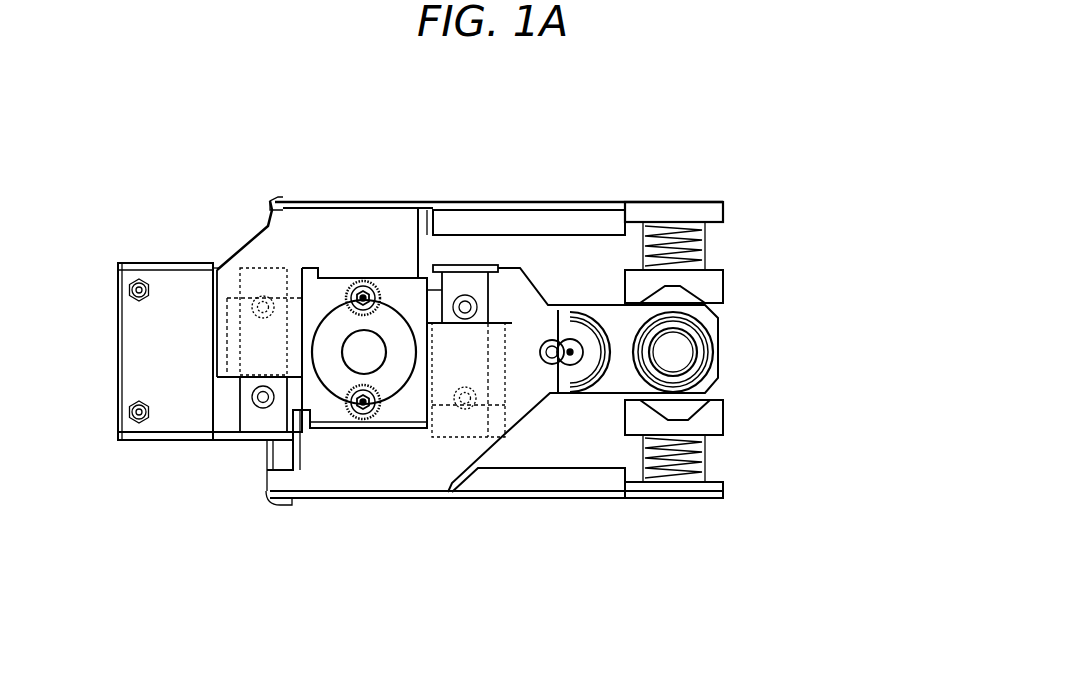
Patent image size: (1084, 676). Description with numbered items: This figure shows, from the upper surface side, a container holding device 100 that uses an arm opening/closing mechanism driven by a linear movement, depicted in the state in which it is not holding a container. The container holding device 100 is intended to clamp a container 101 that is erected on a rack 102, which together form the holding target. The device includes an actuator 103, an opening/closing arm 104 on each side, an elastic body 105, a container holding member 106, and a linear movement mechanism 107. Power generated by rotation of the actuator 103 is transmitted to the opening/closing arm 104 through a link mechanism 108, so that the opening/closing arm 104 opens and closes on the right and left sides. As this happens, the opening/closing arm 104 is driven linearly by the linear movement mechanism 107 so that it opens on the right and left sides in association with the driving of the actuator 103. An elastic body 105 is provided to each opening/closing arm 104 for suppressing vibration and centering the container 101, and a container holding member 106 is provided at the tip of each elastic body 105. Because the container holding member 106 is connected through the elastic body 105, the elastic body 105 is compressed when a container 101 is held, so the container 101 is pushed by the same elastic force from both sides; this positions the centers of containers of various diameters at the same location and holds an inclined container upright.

The container holding device 100 is at (735, 548).
The container 101 is at (713, 353).
The rack 102 is at (718, 376).
The actuator 103 is at (343, 293).
The opening/closing arm 104 is at (590, 202).
The elastic body 105 is at (683, 260).
The container holding member 106 is at (723, 290).
The linear movement mechanism 107 is at (470, 290).
The link mechanism 108 is at (363, 285).